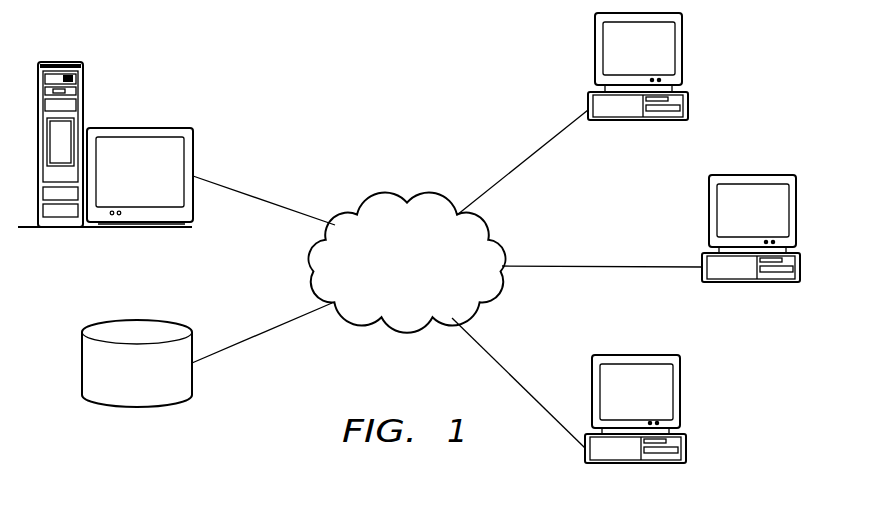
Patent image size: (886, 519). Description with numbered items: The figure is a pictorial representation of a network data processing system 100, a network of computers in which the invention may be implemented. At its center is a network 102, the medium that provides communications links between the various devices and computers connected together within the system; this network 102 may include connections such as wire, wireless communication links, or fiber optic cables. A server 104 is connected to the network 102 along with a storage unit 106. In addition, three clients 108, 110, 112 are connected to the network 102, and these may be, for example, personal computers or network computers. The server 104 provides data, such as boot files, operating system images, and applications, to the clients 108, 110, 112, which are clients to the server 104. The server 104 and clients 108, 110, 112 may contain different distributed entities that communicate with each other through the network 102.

The network data processing system 100 is at (282, 74).
The network 102 is at (428, 291).
The server 104 is at (66, 62).
The storage unit 106 is at (82, 366).
The client 108 is at (683, 58).
The client 110 is at (796, 217).
The client 112 is at (680, 398).